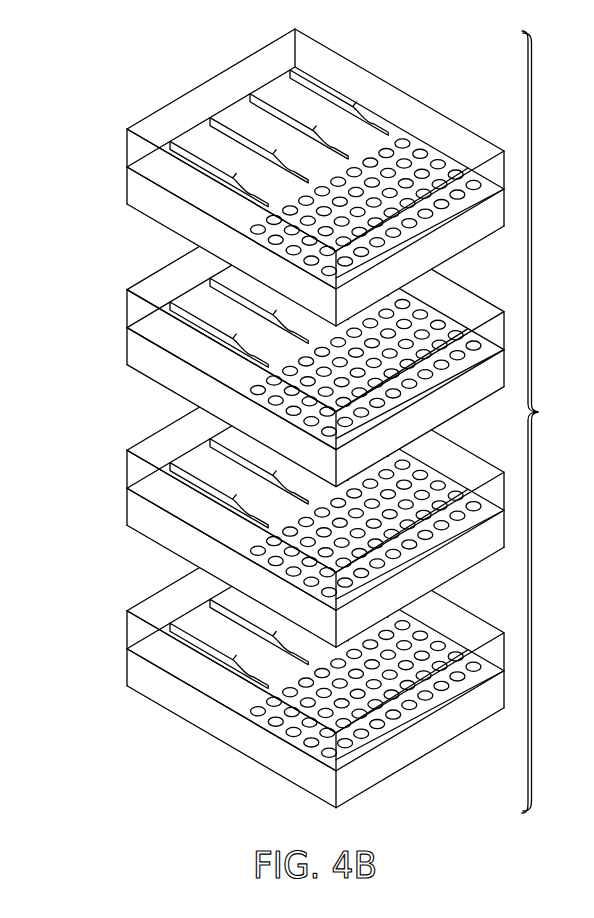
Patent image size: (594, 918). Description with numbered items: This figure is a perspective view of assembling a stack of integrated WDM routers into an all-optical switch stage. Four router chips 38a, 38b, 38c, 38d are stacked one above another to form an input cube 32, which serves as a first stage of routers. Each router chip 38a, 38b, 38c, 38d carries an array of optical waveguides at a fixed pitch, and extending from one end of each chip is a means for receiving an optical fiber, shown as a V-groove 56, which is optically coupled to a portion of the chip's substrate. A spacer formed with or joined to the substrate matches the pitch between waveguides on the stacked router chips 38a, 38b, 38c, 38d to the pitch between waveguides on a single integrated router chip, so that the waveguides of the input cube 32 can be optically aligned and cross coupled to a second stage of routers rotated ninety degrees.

The input cube 32 is at (551, 422).
The router chip 38a is at (143, 203).
The router chip 38b is at (150, 370).
The router chip 38c is at (160, 530).
The router chip 38d is at (155, 694).
The V-groove 56 is at (143, 164).